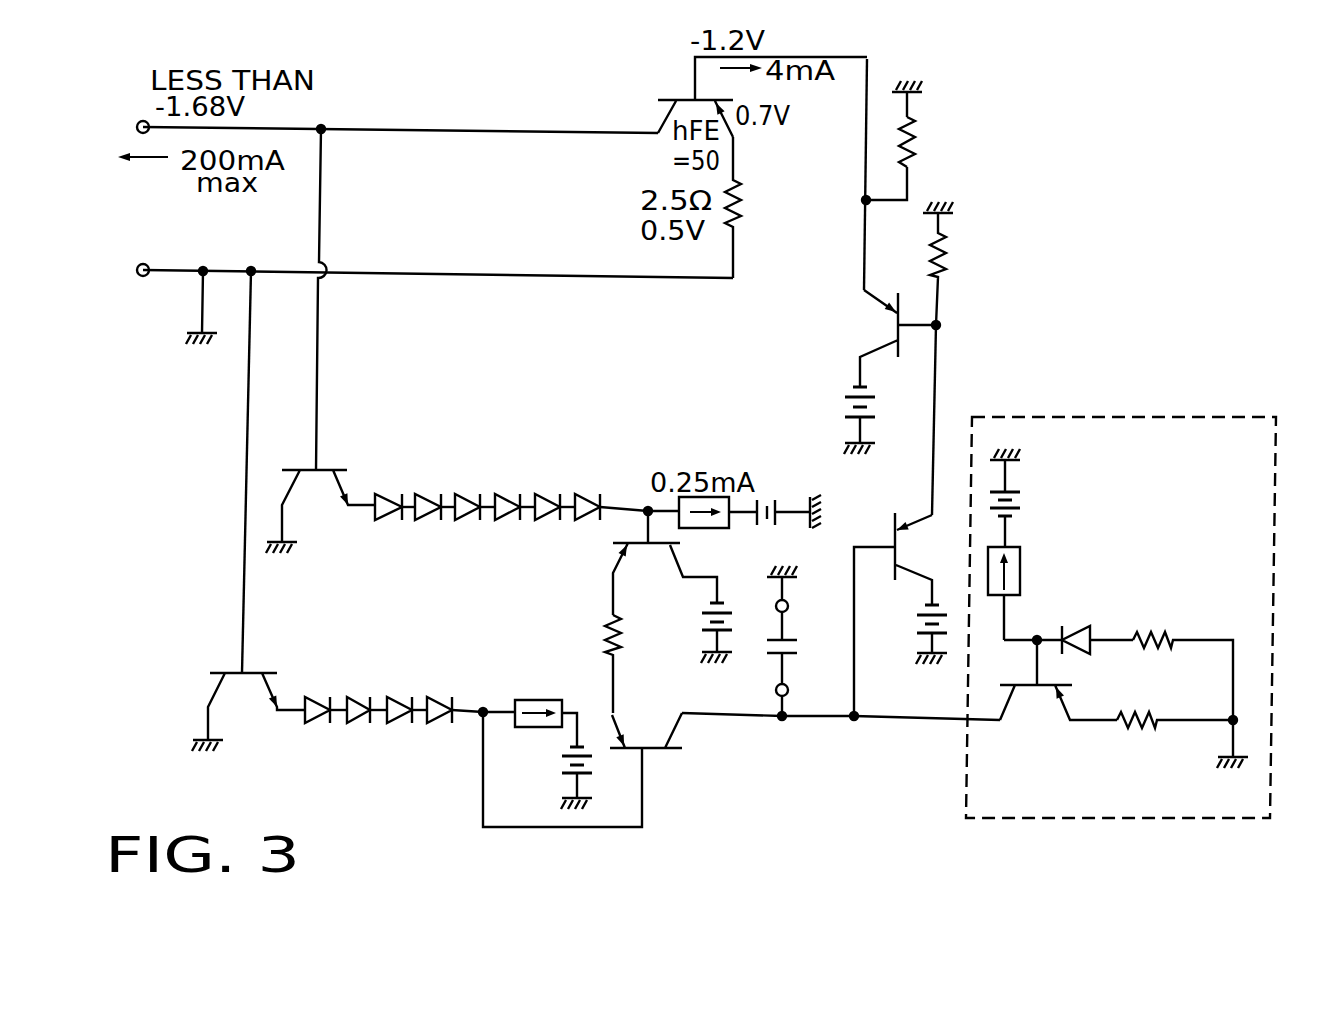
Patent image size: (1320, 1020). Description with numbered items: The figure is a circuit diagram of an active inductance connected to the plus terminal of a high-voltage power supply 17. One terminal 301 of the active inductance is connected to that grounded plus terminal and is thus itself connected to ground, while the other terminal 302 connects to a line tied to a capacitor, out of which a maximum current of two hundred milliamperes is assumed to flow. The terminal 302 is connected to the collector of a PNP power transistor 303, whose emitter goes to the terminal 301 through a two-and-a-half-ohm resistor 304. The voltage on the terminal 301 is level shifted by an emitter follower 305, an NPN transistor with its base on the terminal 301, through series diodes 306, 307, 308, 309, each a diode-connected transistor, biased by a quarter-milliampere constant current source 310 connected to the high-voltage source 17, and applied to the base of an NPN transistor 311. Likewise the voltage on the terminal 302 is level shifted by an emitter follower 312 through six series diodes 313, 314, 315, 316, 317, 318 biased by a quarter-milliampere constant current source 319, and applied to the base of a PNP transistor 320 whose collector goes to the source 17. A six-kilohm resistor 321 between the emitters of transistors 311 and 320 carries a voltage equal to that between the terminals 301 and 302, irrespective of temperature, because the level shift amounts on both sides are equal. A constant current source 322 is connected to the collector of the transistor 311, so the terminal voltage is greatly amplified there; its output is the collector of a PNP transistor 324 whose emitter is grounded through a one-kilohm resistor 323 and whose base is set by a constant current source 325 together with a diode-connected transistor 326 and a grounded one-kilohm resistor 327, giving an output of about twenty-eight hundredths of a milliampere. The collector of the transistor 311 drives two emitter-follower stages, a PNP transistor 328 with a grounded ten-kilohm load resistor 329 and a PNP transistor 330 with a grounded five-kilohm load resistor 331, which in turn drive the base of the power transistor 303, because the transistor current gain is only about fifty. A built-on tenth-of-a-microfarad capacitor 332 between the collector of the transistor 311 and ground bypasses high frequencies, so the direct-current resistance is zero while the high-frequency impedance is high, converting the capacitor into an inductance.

The high-voltage power supply 17 is at (842, 399).
The terminal 301 is at (140, 277).
The terminal 302 is at (140, 122).
The PNP power transistor 303 is at (690, 97).
The 2.5-Ω resistor 304 is at (740, 206).
The emitter follower 305 is at (241, 683).
The diode 306 is at (316, 724).
The diode 307 is at (362, 724).
The diode 308 is at (400, 724).
The diode 309 is at (440, 724).
The 0.25-mA constant current source 310 is at (540, 729).
The NPN transistor 311 is at (660, 752).
The emitter follower 312 is at (318, 478).
The diode 313 is at (382, 495).
The diode 314 is at (430, 487).
The diode 315 is at (468, 495).
The diode 316 is at (504, 499).
The diode 317 is at (547, 495).
The diode 318 is at (588, 499).
The 0.25-mA constant current source 319 is at (706, 529).
The PNP transistor 320 is at (648, 550).
The 6-kΩ resistor 321 is at (622, 636).
The constant current source 322 is at (1088, 819).
The 1-kΩ resistor 323 is at (1133, 726).
The PNP transistor 324 is at (1030, 697).
The constant current source 325 is at (1022, 548).
The diode-connected transistor 326 is at (1072, 632).
The 1-kΩ resistor 327 is at (1165, 650).
The PNP emitter-follower transistor 328 is at (935, 560).
The 10-kΩ load resistor 329 is at (945, 212).
The PNP emitter-follower transistor 330 is at (885, 310).
The 5-kΩ load resistor 331 is at (913, 120).
The 0.1-μF capacitor 332 is at (785, 643).